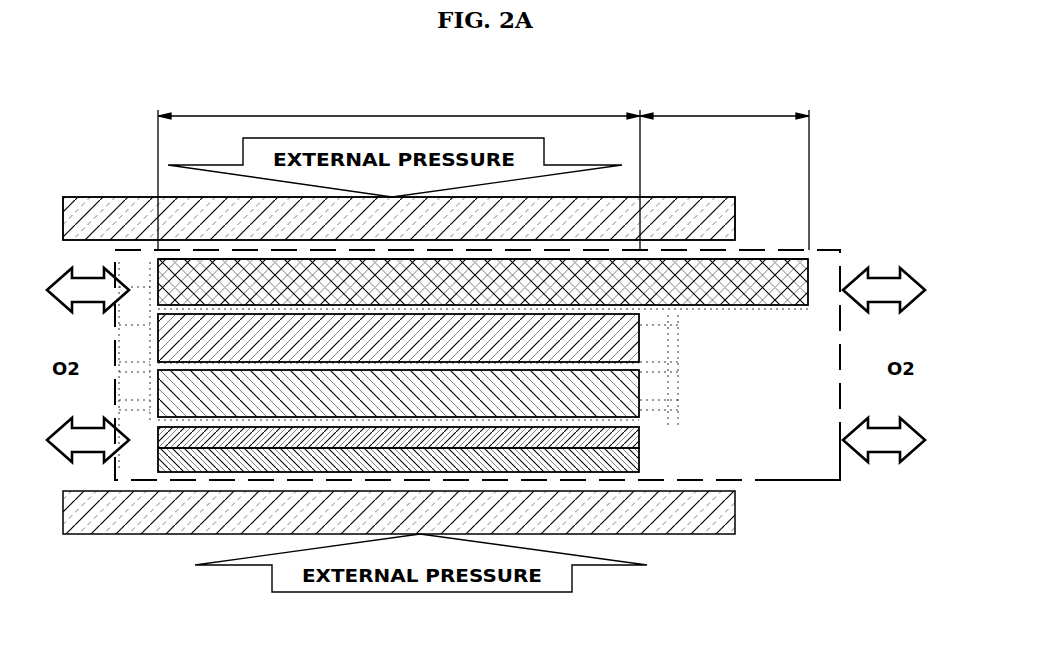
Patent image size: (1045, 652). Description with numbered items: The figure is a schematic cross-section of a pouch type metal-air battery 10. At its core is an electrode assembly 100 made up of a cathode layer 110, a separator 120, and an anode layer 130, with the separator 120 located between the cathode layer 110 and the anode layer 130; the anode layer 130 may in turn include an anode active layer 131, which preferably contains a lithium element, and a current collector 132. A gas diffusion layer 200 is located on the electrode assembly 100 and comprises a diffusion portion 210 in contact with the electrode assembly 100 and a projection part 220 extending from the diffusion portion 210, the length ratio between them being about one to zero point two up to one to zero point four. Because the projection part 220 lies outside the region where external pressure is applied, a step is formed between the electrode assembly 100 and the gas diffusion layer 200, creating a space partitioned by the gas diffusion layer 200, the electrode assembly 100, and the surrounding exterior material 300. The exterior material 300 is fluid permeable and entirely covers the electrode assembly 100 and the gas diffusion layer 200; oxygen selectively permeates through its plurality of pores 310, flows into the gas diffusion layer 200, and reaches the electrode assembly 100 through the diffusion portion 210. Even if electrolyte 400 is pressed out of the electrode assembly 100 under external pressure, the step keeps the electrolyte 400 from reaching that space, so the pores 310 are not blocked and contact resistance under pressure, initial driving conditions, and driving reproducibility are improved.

The pouch type metal-air battery 10 is at (113, 86).
The electrode assembly 100 is at (497, 393).
The cathode layer 110 is at (639, 341).
The separator 120 is at (639, 391).
The anode layer 130 is at (464, 449).
The anode active layer 131 is at (639, 434).
The current collector 132 is at (639, 458).
The gas diffusion layer 200 is at (800, 273).
The diffusion portion 210 is at (399, 177).
The projection part 220 is at (724, 177).
The exterior material 300 is at (773, 481).
The pores 310 is at (802, 481).
The electrolyte 400 is at (148, 417).